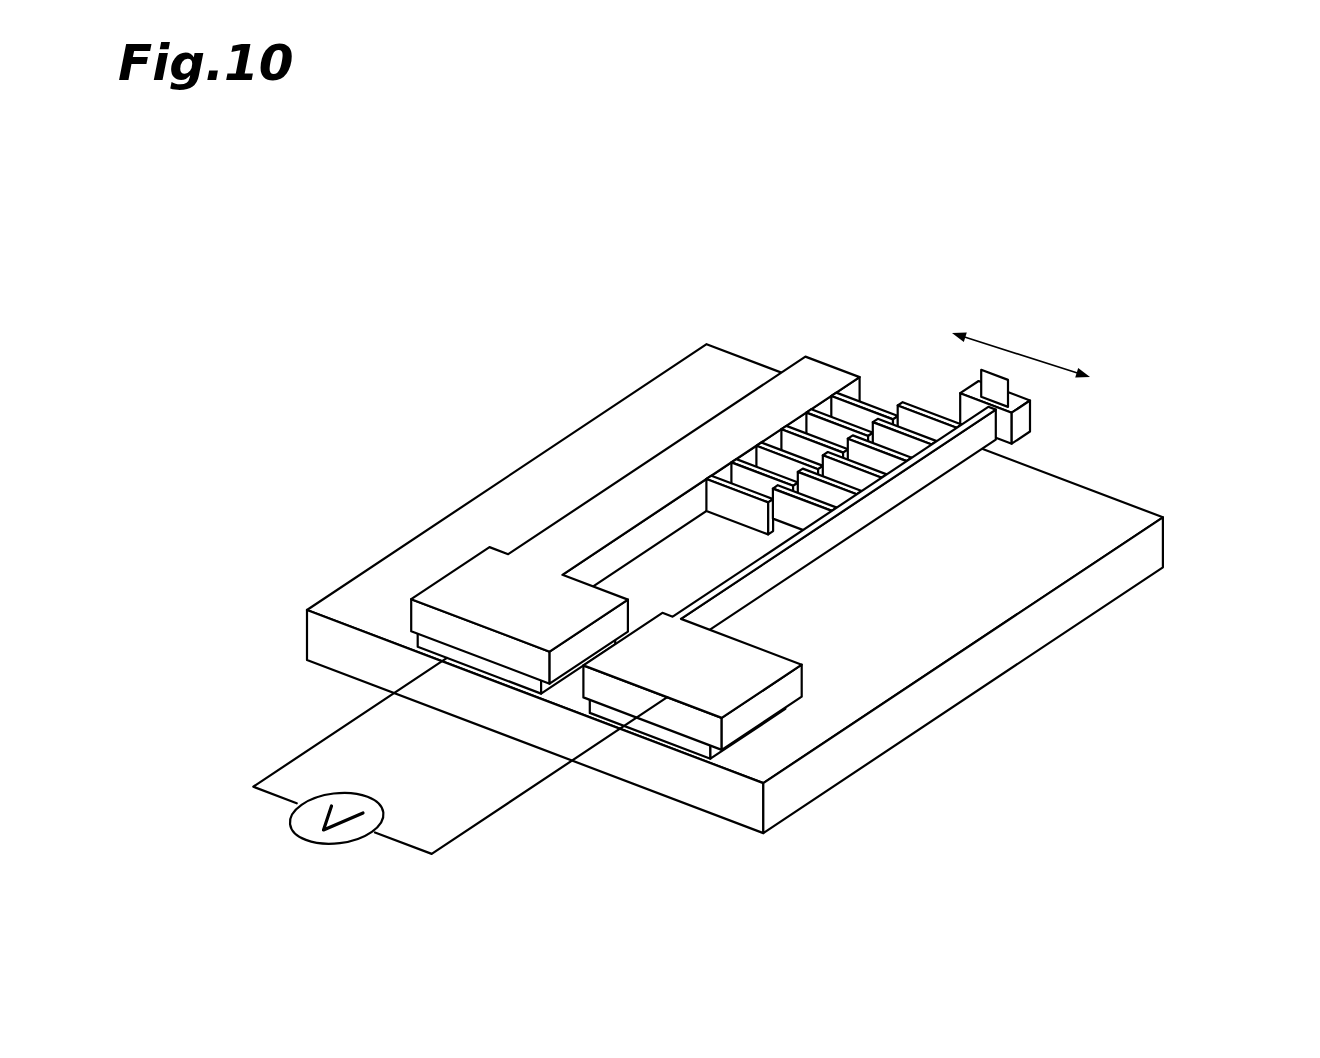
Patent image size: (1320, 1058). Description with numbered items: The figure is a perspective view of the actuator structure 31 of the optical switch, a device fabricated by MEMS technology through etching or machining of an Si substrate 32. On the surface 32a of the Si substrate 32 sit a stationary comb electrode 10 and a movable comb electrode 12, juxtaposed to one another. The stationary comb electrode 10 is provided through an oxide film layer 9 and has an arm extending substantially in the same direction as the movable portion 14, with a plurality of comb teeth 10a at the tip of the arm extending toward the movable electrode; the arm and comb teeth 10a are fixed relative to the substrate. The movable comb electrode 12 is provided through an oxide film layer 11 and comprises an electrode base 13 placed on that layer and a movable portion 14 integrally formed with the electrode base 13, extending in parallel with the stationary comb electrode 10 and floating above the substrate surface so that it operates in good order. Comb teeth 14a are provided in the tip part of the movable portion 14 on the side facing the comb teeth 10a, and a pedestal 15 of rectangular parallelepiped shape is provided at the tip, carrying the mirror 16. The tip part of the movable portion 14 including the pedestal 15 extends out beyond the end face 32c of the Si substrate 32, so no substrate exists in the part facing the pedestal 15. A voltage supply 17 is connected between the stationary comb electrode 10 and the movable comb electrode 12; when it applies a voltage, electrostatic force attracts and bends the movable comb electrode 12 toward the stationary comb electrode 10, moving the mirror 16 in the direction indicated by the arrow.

The oxide film layer 9 is at (497, 670).
The stationary comb electrode 10 is at (654, 498).
The comb teeth 10a is at (872, 400).
The oxide film layer 11 is at (680, 738).
The movable comb electrode 12 is at (843, 574).
The electrode base 13 is at (768, 707).
The movable portion 14 is at (834, 526).
The comb teeth 14a is at (802, 503).
The pedestal 15 is at (998, 430).
The mirror 16 is at (998, 383).
The voltage supply 17 is at (325, 846).
The actuator structure 31 is at (792, 533).
The Si substrate 32 is at (792, 588).
The surface 32a is at (1126, 514).
The end face 32c is at (1167, 537).